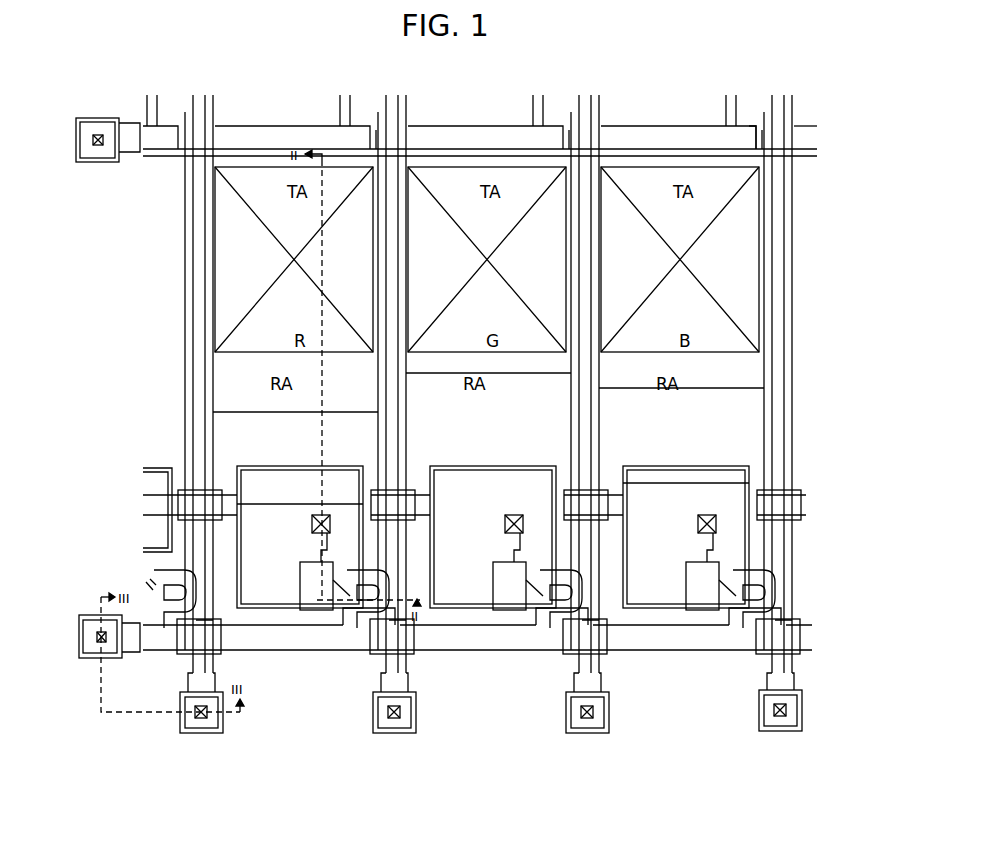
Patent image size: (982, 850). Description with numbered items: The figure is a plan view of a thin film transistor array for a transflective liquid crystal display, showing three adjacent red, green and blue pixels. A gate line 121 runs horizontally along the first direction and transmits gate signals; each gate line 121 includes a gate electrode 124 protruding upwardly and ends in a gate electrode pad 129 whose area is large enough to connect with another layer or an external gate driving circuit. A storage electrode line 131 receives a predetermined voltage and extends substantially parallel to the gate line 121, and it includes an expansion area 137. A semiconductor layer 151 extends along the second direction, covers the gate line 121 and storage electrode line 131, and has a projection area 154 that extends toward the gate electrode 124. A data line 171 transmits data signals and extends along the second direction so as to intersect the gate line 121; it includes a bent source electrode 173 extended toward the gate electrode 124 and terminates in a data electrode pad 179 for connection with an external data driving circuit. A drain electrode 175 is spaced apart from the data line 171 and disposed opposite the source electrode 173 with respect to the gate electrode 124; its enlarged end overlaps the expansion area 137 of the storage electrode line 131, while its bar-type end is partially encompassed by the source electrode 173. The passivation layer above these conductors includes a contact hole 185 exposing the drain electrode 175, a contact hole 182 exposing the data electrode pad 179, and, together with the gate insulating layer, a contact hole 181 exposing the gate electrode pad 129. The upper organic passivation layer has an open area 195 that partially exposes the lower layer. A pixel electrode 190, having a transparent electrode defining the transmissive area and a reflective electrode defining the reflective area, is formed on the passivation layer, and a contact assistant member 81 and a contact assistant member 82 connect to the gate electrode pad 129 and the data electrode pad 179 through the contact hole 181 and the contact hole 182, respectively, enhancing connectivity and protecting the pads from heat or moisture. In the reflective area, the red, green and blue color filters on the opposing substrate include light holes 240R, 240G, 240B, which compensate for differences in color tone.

The gate line 121 is at (253, 627).
The gate electrode 124 is at (784, 582).
The gate electrode pad 129 is at (92, 617).
The storage electrode line 131 is at (698, 491).
The expansion area 137 is at (727, 521).
The semiconductor layer 151 is at (786, 303).
The projection area 154 is at (791, 598).
The data line 171 is at (774, 340).
The source electrode 173 is at (782, 624).
The drain electrode 175 is at (363, 632).
The data electrode pad 179 is at (223, 728).
The contact hole 181 is at (100, 642).
The contact hole 182 is at (197, 713).
The contact hole 185 is at (769, 524).
The pixel electrode 190 is at (731, 437).
The open area 195 is at (766, 240).
The contact assistant member 81 is at (113, 658).
The contact assistant member 82 is at (180, 704).
The light hole 240R is at (339, 414).
The light hole 240G is at (488, 365).
The light hole 240B is at (681, 373).